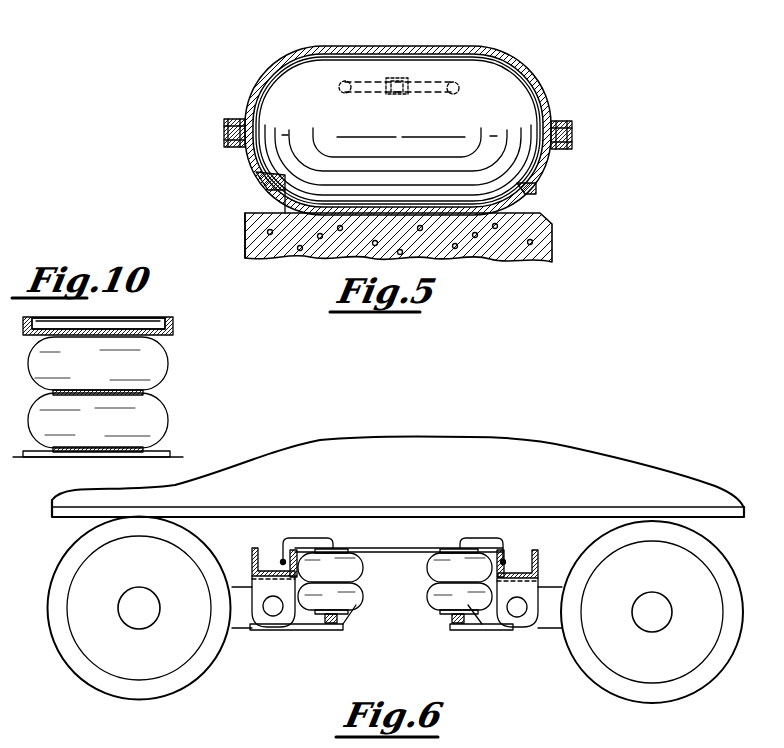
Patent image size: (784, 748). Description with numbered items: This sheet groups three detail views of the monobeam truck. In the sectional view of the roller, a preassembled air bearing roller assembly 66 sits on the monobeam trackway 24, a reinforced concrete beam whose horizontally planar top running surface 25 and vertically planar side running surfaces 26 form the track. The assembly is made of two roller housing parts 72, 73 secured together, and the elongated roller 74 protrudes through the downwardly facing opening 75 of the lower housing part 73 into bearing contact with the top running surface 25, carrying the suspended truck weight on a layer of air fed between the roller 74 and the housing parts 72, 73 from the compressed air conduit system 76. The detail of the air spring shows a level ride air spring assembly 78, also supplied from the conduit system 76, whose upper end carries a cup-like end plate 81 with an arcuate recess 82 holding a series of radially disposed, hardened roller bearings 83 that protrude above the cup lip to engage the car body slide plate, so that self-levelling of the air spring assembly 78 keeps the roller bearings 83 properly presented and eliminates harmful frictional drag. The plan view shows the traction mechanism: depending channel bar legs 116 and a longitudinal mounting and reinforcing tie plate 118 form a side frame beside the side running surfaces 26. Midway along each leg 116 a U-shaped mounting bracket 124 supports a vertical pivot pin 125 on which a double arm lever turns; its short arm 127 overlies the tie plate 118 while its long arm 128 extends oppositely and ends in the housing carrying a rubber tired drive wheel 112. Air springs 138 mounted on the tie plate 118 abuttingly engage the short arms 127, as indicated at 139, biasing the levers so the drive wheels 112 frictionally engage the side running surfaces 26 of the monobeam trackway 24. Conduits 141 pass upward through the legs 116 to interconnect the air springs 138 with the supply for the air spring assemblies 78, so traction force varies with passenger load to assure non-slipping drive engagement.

In FIG. 5, the monobeam trackway 24 is at (528, 238).
In FIG. 6, the monobeam trackway 24 is at (570, 465).
In FIG. 5, the top running surface 25 is at (262, 209).
In FIG. 6, the top running surface 25 is at (485, 453).
In FIG. 5, the side running surfaces 26 is at (247, 246).
In FIG. 6, the side running surfaces 26 is at (737, 524).
In FIG. 5, the air bearing roller assembly 66 is at (533, 70).
In FIG. 5, the roller housing part 72 is at (490, 53).
In FIG. 5, the roller housing part 73 is at (548, 170).
In FIG. 5, the elongated roller 74 is at (515, 113).
In FIG. 5, the downwardly facing opening 75 is at (396, 205).
In FIG. 5, the compressed air conduit system 76 is at (452, 86).
In FIG. 10, the level ride air spring assembly 78 is at (172, 382).
In FIG. 10, the cup-like end plate 81 is at (175, 330).
In FIG. 10, the arcuate recess 82 is at (167, 323).
In FIG. 10, the roller bearings 83 is at (147, 318).
In FIG. 6, the drive wheels 112 is at (90, 672).
In FIG. 6, the channel bar legs 116 is at (252, 553).
In FIG. 6, the mounting and reinforcing tie plate 118 is at (396, 548).
In FIG. 6, the U-shaped mounting bracket 124 is at (295, 617).
In FIG. 6, the pivot pin 125 is at (273, 617).
In FIG. 6, the short arm 127 is at (458, 631).
In FIG. 6, the long arm 128 is at (243, 621).
In FIG. 6, the air springs 138 is at (358, 571).
In FIG. 6, the abutting engagement 139 is at (342, 621).
In FIG. 6, the conduits 141 is at (283, 558).